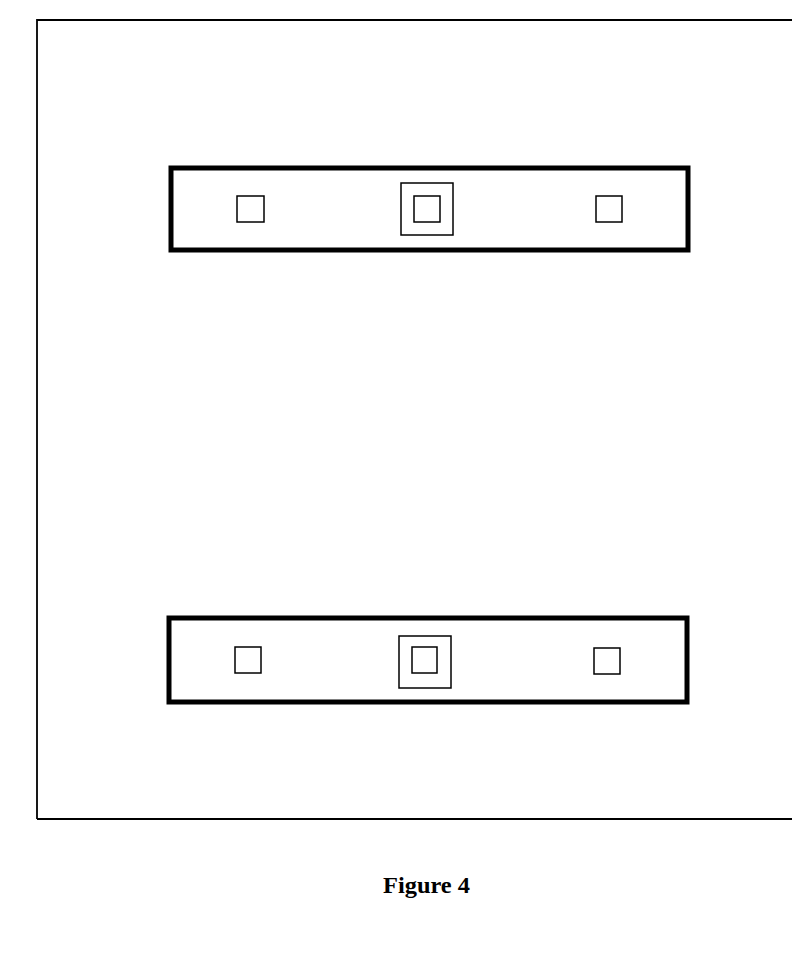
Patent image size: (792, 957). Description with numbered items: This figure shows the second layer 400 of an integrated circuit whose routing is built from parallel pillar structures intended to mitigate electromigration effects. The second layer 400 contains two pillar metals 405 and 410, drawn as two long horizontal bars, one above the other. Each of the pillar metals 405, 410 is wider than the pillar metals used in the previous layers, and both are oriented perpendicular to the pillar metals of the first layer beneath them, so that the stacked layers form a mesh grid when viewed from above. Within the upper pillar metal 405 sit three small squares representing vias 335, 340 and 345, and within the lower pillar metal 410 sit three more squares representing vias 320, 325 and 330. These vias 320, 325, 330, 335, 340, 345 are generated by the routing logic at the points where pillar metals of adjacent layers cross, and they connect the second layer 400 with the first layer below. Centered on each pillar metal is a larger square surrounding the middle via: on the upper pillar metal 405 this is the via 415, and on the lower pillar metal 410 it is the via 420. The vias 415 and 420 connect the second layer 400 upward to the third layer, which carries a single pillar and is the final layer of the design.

The second layer 400 is at (508, 53).
The pillar metal 405 is at (692, 208).
The pillar metal 410 is at (690, 659).
The via 415 is at (453, 208).
The via 420 is at (451, 660).
The via 320 is at (235, 659).
The via 325 is at (412, 660).
The via 330 is at (594, 660).
The via 335 is at (237, 209).
The via 340 is at (414, 209).
The via 345 is at (596, 208).